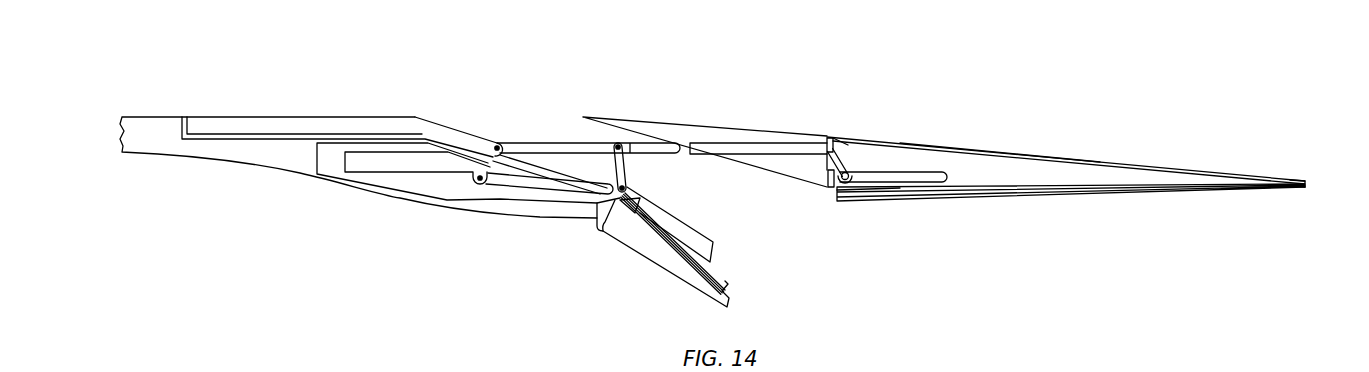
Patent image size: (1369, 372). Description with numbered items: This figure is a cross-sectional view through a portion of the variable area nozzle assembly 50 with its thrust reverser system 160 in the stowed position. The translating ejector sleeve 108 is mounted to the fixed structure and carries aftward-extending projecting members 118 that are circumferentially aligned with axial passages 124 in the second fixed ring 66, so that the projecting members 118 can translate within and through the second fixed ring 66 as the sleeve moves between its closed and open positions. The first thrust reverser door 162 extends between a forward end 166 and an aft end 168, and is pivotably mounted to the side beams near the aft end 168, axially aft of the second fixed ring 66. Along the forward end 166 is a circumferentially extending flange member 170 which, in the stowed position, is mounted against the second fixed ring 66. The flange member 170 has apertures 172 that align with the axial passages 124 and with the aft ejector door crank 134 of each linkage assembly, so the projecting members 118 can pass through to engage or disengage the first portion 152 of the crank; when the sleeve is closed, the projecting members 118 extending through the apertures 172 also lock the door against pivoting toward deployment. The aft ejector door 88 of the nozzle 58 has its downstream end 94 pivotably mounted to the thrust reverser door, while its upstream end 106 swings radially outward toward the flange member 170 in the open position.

The variable area nozzle assembly 50 is at (1228, 90).
The nozzle 58 is at (934, 285).
The second fixed ring 66 is at (724, 112).
The aft ejector door 88 is at (1156, 212).
The downstream end 94 is at (1313, 199).
The upstream end 106 is at (840, 208).
The translating ejector sleeve 108 is at (319, 118).
The projecting members 118 is at (649, 143).
The axial passages 124 is at (788, 163).
The aft ejector door crank 134 is at (940, 170).
The first portion 152 is at (860, 146).
The thrust reverser system 160 is at (1050, 132).
The first thrust reverser door 162 is at (993, 152).
The forward end 166 is at (833, 125).
The aft end 168 is at (1314, 170).
The flange member 170 is at (828, 182).
The apertures 172 is at (856, 147).